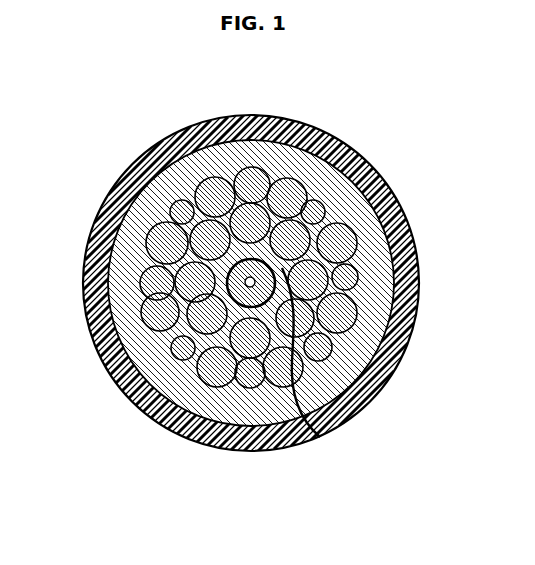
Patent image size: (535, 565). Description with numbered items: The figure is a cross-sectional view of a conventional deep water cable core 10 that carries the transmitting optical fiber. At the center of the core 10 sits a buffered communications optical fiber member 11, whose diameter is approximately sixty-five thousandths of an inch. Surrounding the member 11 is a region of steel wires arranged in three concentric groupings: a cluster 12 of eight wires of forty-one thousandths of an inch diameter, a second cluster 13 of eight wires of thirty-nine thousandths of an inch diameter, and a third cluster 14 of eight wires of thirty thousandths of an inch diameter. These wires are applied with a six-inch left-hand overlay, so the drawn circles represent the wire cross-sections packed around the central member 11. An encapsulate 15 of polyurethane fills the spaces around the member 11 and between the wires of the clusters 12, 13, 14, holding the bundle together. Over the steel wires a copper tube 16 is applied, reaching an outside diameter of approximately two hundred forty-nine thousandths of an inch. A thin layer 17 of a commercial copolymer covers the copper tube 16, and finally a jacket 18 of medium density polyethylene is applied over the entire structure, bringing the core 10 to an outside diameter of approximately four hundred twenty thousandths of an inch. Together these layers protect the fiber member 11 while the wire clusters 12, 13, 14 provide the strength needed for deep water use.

The deep water core 10 is at (80, 418).
The buffered communications optical fiber member 11 is at (277, 262).
The cluster of eight wires 12 is at (300, 323).
The second cluster 13 is at (397, 240).
The third cluster 14 is at (397, 280).
The encapsulate of polyurethane 15 is at (320, 437).
The copper tube 16 is at (118, 205).
The thin layer of copolymer 17 is at (98, 283).
The jacket 18 is at (137, 167).